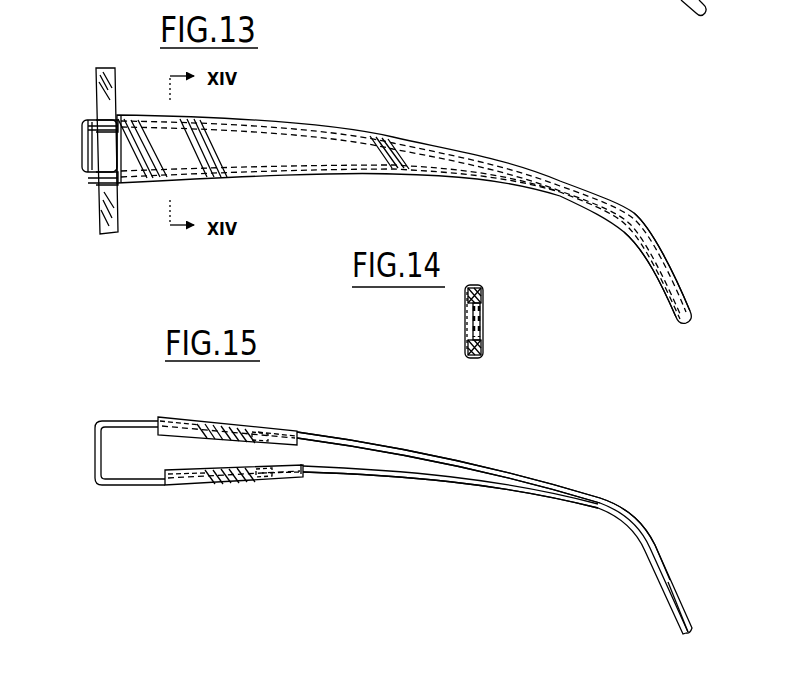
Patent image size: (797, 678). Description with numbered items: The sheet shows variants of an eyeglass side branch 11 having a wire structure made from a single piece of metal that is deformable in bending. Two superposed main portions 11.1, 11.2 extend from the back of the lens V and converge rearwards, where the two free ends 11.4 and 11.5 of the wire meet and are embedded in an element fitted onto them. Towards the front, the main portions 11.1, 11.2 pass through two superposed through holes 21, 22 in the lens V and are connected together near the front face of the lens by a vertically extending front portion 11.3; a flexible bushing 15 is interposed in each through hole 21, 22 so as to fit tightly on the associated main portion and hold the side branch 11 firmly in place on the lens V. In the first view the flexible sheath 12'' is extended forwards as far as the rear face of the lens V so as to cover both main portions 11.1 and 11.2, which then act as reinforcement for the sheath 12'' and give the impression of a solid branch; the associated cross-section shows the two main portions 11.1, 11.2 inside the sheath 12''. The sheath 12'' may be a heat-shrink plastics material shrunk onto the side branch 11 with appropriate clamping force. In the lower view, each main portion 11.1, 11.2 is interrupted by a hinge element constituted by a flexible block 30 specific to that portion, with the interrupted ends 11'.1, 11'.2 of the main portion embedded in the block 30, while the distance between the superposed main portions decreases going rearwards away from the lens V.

In FIG. 13, the side branch 11 is at (404, 198).
In FIG. 14, the side branch 11 is at (499, 306).
In FIG. 15, the side branch 11 is at (494, 513).
In FIG. 13, the main portion 11.1 is at (290, 132).
In FIG. 14, the main portion 11.1 is at (468, 298).
In FIG. 15, the main portion 11.1 is at (325, 435).
In FIG. 13, the main portion 11.2 is at (278, 165).
In FIG. 14, the main portion 11.2 is at (468, 347).
In FIG. 15, the main portion 11.2 is at (338, 467).
In FIG. 13, the front portion 11.3 is at (85, 150).
In FIG. 15, the front portion 11.3 is at (97, 450).
In FIG. 13, the free end 11.4 is at (627, 215).
In FIG. 15, the free end 11.4 is at (658, 557).
In FIG. 13, the free end 11.5 is at (638, 242).
In FIG. 15, the free end 11.5 is at (663, 582).
In FIG. 13, the flexible sheath 12'' is at (263, 172).
In FIG. 14, the flexible sheath 12'' is at (508, 335).
In FIG. 13, the flexible bushing 15 is at (91, 119).
In FIG. 13, the through hole 21 is at (108, 101).
In FIG. 13, the through hole 22 is at (107, 186).
In FIG. 13, the lens V is at (100, 218).
In FIG. 15, the flexible block 30 is at (228, 428).
In FIG. 15, the interrupted end 11'.1 is at (223, 406).
In FIG. 15, the interrupted end 11'.2 is at (218, 507).